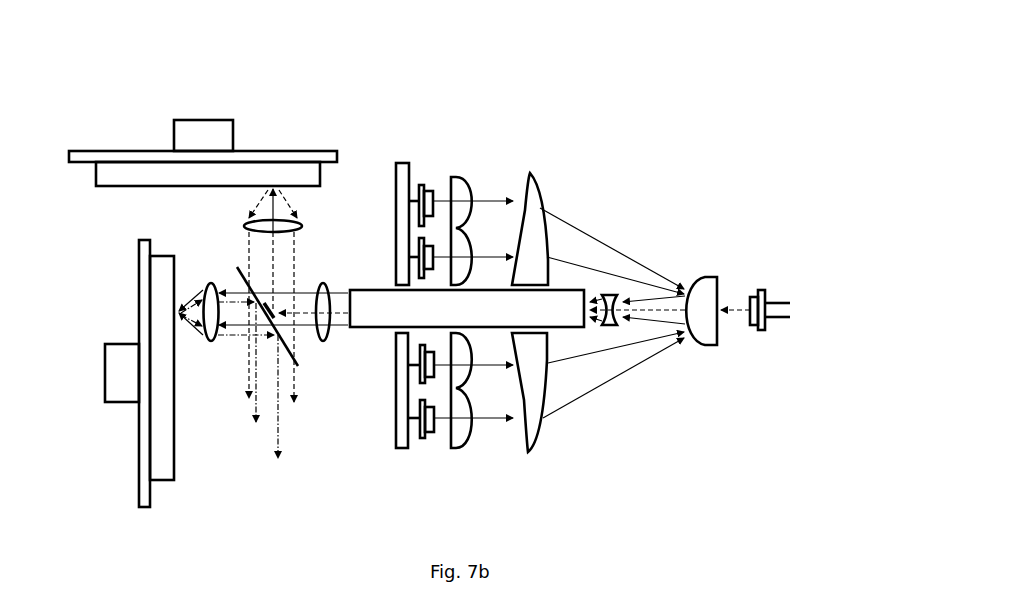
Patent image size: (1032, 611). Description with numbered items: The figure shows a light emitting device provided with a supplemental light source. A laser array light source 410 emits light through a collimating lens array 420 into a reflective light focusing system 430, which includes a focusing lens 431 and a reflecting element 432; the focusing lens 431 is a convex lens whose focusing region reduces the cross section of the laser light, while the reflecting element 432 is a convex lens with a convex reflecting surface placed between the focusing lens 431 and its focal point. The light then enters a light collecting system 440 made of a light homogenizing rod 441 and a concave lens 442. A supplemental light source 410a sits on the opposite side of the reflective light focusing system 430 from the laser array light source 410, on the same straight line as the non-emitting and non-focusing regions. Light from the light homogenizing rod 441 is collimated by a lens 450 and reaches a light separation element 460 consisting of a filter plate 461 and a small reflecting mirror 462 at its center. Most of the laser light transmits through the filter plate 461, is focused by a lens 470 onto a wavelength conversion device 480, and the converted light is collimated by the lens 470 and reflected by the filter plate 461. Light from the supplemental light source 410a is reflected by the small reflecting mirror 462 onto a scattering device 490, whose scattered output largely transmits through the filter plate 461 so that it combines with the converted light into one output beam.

The laser array light source 410 is at (410, 183).
The supplemental light source 410a is at (777, 308).
The collimating lens array 420 is at (458, 427).
The reflective light focusing system 430 is at (614, 347).
The focusing lens 431 is at (540, 443).
The reflecting element 432 is at (716, 348).
The light collecting system 440 is at (559, 258).
The light homogenizing rod 441 is at (572, 288).
The concave lens 442 is at (610, 295).
The lens 450 is at (330, 288).
The light separation element 460 is at (298, 376).
The filter plate 461 is at (281, 336).
The small reflecting mirror 462 is at (277, 321).
The lens 470 is at (208, 285).
The wavelength conversion device 480 is at (157, 462).
The scattering device 490 is at (113, 170).